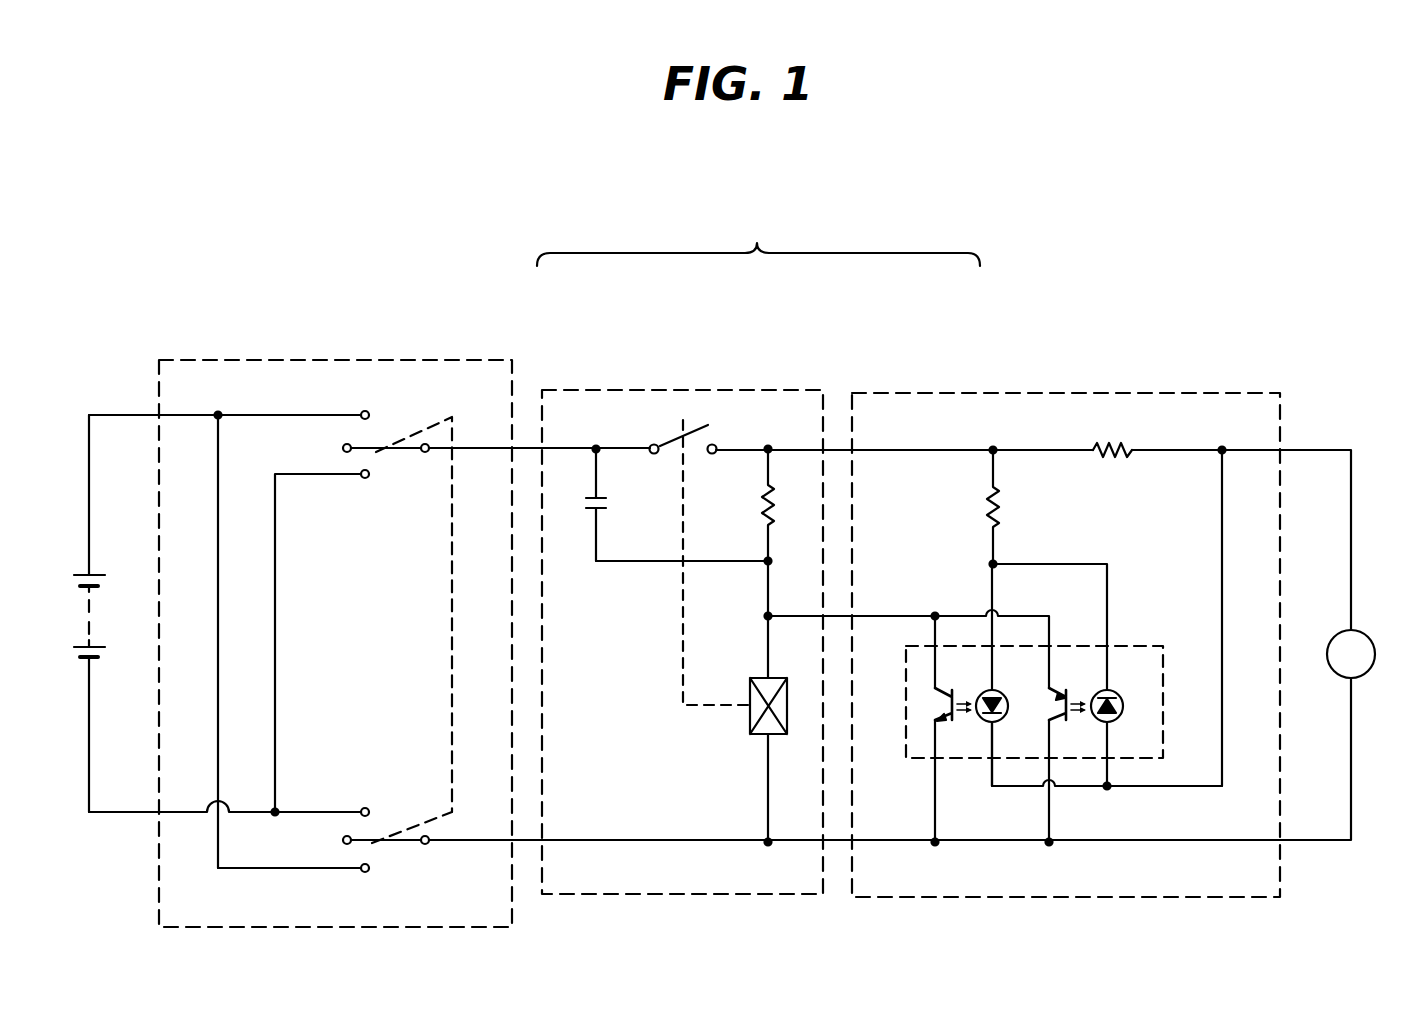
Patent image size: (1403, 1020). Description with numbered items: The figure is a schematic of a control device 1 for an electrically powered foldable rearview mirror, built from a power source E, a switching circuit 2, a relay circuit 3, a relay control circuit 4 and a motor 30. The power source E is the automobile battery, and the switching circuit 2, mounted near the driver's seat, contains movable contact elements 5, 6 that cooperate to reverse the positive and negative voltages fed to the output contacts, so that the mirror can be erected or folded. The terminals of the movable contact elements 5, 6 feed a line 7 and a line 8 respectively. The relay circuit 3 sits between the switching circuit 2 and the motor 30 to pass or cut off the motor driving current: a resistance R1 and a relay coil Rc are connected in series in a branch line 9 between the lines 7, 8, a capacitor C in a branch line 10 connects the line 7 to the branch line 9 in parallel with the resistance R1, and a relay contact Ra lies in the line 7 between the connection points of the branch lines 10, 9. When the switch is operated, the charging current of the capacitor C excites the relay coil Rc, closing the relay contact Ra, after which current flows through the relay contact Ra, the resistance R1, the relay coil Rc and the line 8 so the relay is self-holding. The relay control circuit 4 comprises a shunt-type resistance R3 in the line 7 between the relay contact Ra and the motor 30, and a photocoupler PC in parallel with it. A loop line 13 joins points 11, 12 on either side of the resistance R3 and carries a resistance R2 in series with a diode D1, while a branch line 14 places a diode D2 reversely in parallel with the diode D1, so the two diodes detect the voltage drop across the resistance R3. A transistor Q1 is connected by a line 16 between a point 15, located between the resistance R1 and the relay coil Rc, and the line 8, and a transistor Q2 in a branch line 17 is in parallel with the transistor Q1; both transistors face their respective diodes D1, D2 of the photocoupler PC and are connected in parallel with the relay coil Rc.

The control device 1 is at (758, 236).
The switching circuit 2 is at (390, 384).
The relay circuit 3 is at (668, 395).
The relay control circuit 4 is at (958, 395).
The movable contact element 5 is at (382, 456).
The movable contact element 6 is at (400, 846).
The line 7 is at (552, 449).
The line 8 is at (563, 841).
The branch line 9 is at (768, 804).
The branch line 10 is at (626, 562).
The point 11 is at (996, 447).
The point 12 is at (1223, 447).
The loop line 13 is at (1221, 516).
The branch line 14 is at (1108, 605).
The point 15 is at (766, 616).
The line 16 is at (867, 617).
The branch line 17 is at (1050, 816).
The motor 30 is at (1358, 630).
The power source E is at (74, 613).
The relay contact Ra is at (718, 443).
The capacitor C is at (609, 504).
The resistance R1 is at (792, 505).
The relay coil Rc is at (750, 724).
The resistance R2 is at (1016, 507).
The shunt-type resistance R3 is at (1112, 432).
The photocoupler PC is at (930, 758).
The transistor Q1 is at (951, 687).
The diode D1 is at (1006, 675).
The transistor Q2 is at (1067, 686).
The diode D2 is at (1121, 719).